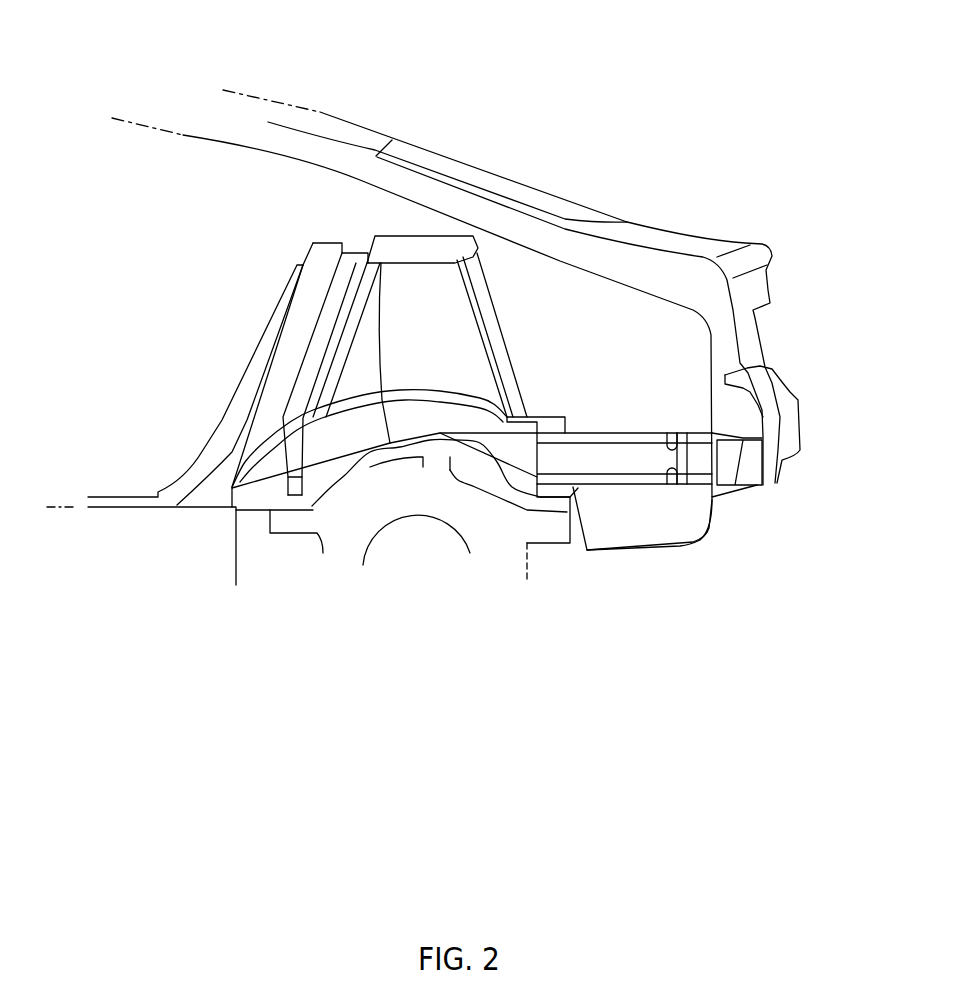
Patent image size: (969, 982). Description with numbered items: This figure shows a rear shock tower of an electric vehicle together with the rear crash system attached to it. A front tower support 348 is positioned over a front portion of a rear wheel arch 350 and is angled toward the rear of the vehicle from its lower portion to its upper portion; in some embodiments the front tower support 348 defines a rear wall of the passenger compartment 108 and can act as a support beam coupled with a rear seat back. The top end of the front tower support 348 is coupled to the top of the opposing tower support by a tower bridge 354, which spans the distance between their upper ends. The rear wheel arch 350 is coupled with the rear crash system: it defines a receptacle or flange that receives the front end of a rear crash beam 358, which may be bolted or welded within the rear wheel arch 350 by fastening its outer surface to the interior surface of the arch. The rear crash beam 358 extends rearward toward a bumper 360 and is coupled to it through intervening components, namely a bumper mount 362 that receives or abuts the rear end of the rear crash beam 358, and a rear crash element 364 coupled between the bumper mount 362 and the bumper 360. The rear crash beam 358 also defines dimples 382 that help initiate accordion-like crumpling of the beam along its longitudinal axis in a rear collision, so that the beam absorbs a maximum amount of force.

The passenger compartment 108 is at (116, 276).
The front tower support 348 is at (347, 318).
The rear wheel arch 350 is at (498, 312).
The tower bridge 354 is at (415, 245).
The rear crash beam 358 is at (597, 487).
The bumper 360 is at (752, 484).
The bumper mount 362 is at (700, 433).
The rear crash element 364 is at (728, 438).
The dimples 382 is at (672, 488).